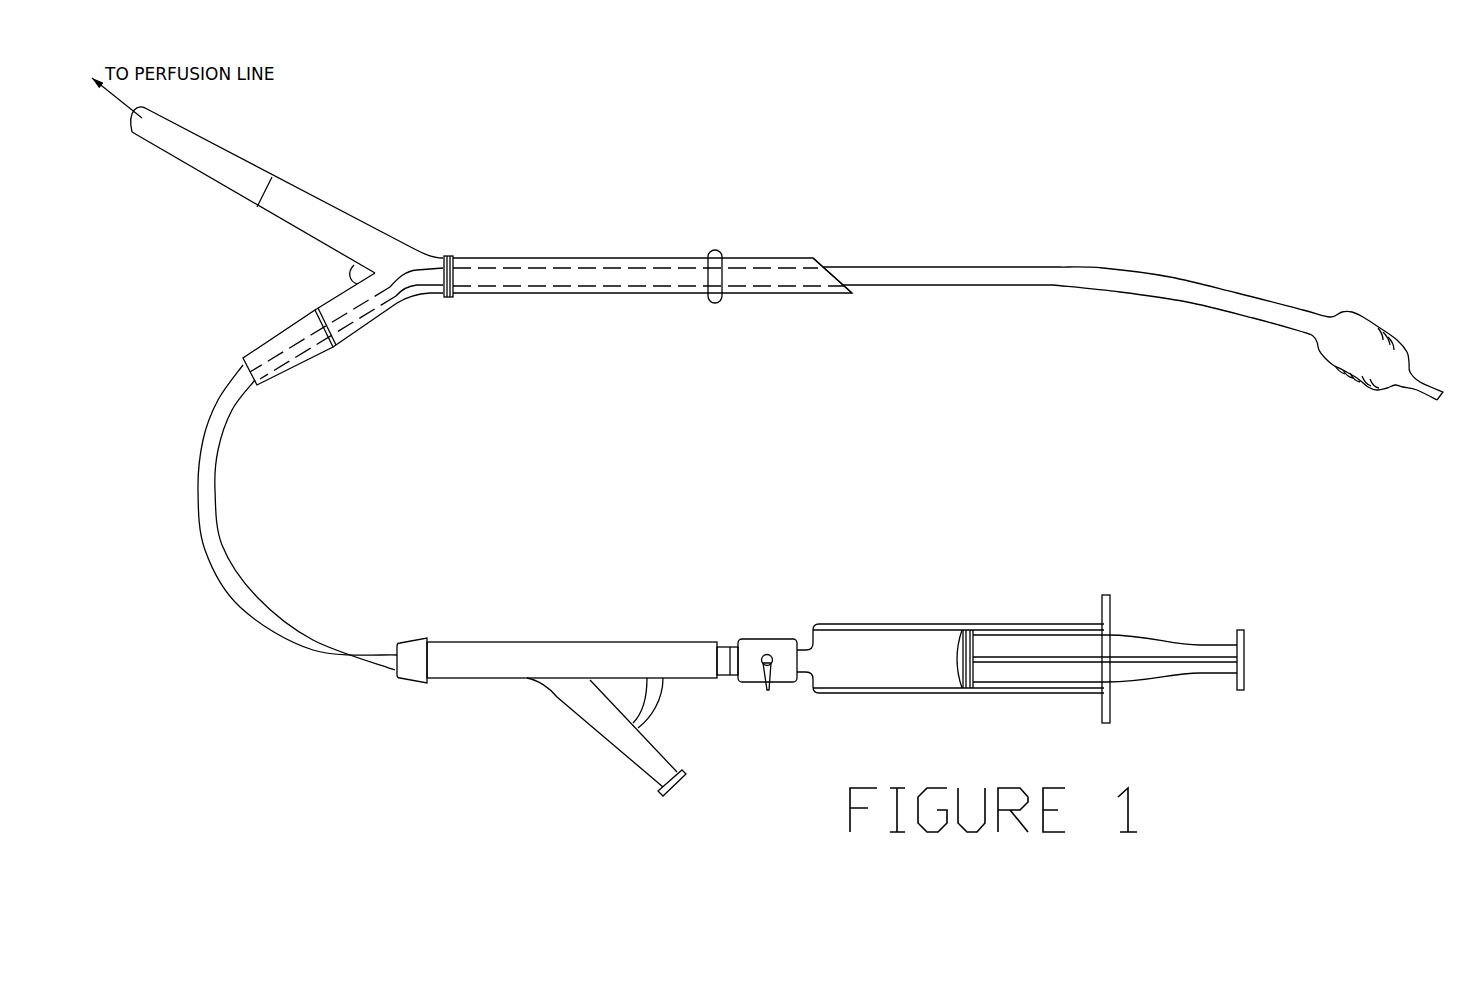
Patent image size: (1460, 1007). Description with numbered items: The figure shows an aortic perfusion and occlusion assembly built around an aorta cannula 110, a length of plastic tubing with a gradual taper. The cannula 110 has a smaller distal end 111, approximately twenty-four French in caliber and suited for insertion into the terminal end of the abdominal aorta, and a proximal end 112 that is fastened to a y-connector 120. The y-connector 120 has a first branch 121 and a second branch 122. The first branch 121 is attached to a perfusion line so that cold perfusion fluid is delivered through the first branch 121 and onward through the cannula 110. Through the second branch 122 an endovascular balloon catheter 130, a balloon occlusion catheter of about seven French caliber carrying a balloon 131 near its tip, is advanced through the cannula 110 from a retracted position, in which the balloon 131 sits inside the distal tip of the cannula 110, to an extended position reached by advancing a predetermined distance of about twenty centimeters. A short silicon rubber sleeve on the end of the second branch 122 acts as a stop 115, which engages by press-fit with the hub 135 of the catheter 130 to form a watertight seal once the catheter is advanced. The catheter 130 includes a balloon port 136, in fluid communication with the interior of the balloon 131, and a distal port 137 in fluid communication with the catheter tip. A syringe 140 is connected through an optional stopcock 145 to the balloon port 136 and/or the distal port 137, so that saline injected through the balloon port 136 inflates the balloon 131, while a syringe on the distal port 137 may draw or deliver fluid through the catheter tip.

The aorta cannula 110 is at (582, 250).
The distal end 111 is at (823, 302).
The proximal end 112 is at (455, 302).
The stop 115 is at (272, 323).
The y-connector 120 is at (420, 243).
The first branch 121 is at (337, 192).
The second branch 122 is at (352, 342).
The endovascular balloon catheter 130 is at (1038, 250).
The balloon 131 is at (1353, 375).
The hub 135 is at (415, 637).
The balloon port 136 is at (583, 635).
The distal port 137 is at (603, 745).
The syringe 140 is at (947, 612).
The stopcock 145 is at (766, 630).